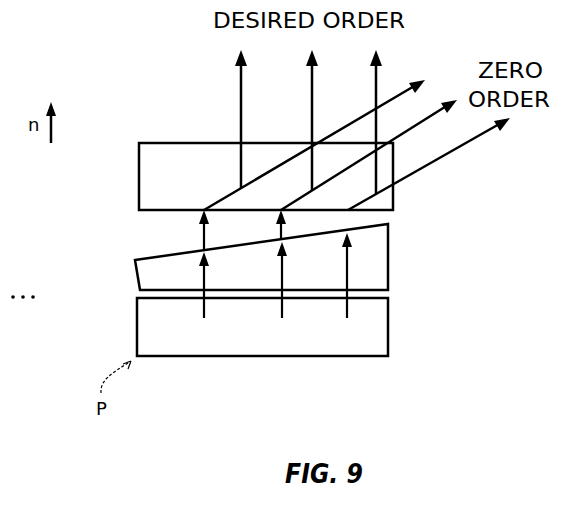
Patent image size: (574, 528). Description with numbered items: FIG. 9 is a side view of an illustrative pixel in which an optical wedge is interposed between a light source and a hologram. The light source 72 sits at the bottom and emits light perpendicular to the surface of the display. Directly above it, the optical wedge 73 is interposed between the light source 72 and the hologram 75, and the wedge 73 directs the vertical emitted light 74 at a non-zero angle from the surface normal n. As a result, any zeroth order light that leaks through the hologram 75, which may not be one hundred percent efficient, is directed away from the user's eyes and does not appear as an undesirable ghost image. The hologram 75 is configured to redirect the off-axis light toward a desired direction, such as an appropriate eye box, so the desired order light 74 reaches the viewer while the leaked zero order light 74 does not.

The light source 72 is at (380, 328).
The optical wedge 73 is at (380, 265).
The emitted light 74 is at (240, 96).
The hologram 75 is at (383, 198).